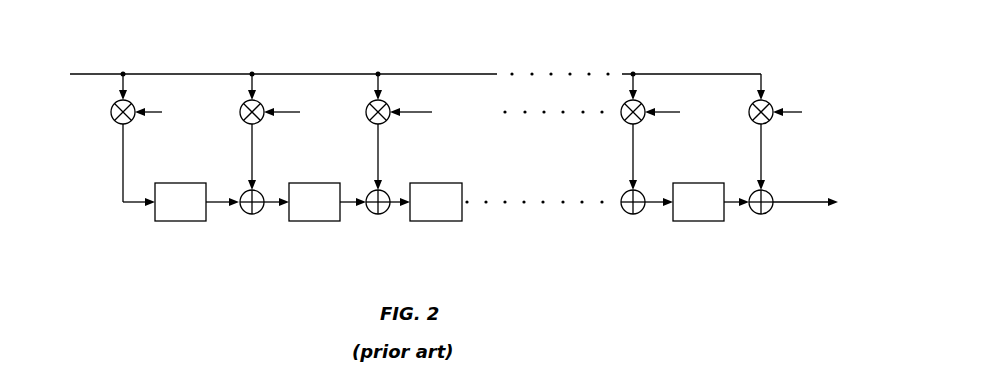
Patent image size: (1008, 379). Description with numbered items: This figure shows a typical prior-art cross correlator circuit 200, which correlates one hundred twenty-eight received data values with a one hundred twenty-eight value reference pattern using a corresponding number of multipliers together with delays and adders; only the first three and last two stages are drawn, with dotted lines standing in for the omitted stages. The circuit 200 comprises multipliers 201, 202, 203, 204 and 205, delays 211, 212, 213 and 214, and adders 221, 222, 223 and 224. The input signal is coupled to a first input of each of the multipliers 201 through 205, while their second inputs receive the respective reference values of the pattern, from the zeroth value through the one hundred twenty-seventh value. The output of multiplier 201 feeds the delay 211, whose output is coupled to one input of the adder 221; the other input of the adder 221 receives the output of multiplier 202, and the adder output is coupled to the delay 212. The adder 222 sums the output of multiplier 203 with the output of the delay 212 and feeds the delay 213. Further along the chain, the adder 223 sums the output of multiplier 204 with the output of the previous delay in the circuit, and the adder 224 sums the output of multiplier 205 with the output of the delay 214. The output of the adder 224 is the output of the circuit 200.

The cross correlator circuit 200 is at (176, 22).
The multiplier 201 is at (111, 112).
The multiplier 202 is at (242, 120).
The multiplier 203 is at (368, 120).
The multiplier 204 is at (623, 120).
The multiplier 205 is at (750, 120).
The delay 211 is at (172, 222).
The delay 212 is at (322, 222).
The delay 213 is at (456, 222).
The delay 214 is at (705, 222).
The adder 221 is at (251, 215).
The adder 222 is at (378, 215).
The adder 223 is at (633, 215).
The adder 224 is at (761, 215).